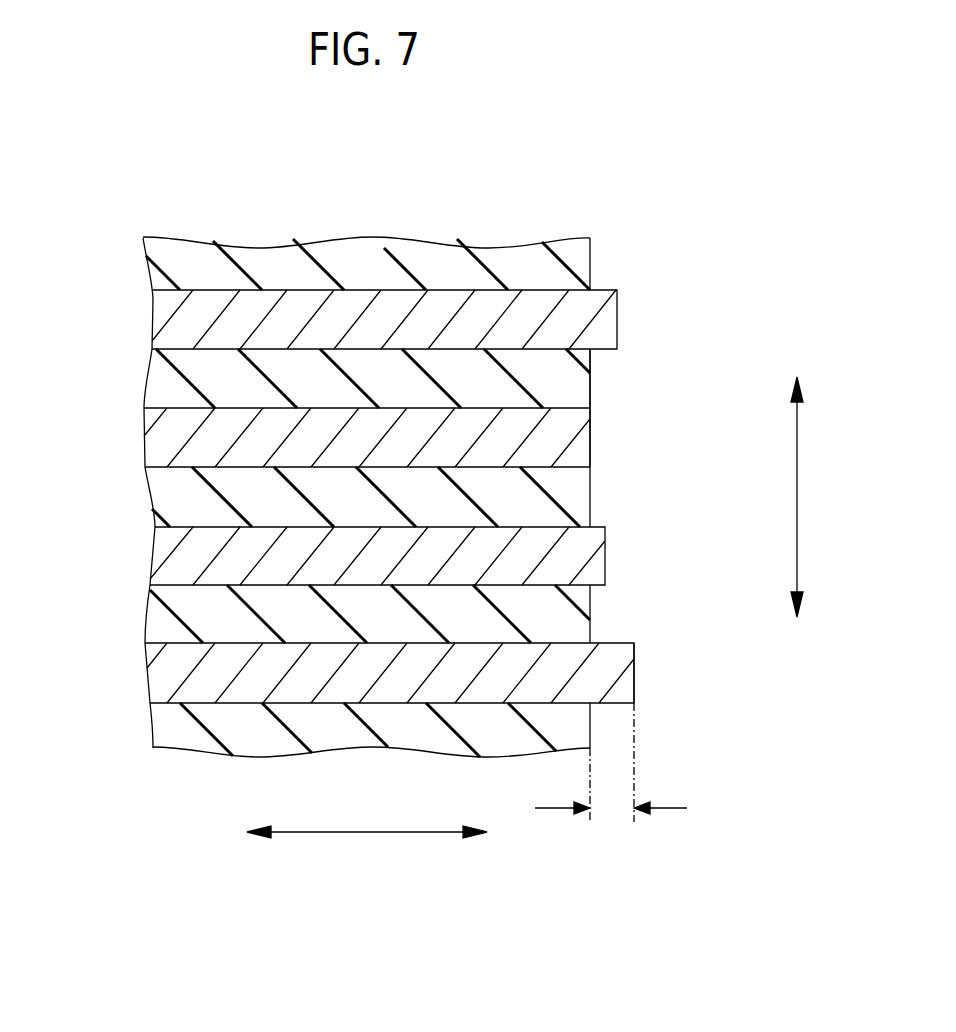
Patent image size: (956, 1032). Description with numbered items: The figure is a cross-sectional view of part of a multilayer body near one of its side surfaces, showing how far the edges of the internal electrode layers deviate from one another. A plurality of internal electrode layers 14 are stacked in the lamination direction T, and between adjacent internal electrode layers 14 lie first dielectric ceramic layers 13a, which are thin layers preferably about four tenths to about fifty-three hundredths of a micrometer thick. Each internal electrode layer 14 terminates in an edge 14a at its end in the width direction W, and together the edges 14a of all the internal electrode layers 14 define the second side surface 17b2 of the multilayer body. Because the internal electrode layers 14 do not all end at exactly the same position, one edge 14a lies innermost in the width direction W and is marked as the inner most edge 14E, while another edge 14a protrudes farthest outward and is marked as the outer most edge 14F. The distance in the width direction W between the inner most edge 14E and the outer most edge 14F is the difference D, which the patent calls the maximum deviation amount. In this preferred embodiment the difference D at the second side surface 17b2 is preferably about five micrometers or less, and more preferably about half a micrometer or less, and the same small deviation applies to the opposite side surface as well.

The internal electrode layer 14 is at (356, 307).
The first dielectric ceramic layer 13a is at (170, 382).
The second side surface 17b2 is at (590, 378).
The inner most edge 14E is at (562, 433).
The edge of internal electrode layer 14a is at (590, 450).
The outer most edge 14F is at (615, 688).
The lamination direction T is at (807, 497).
The width direction W is at (367, 845).
The difference D is at (624, 763).